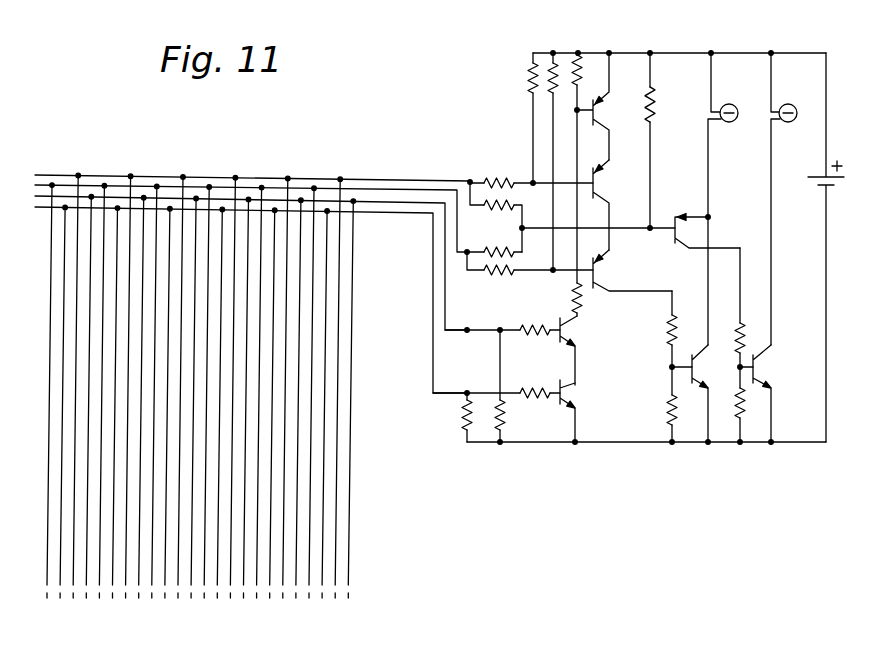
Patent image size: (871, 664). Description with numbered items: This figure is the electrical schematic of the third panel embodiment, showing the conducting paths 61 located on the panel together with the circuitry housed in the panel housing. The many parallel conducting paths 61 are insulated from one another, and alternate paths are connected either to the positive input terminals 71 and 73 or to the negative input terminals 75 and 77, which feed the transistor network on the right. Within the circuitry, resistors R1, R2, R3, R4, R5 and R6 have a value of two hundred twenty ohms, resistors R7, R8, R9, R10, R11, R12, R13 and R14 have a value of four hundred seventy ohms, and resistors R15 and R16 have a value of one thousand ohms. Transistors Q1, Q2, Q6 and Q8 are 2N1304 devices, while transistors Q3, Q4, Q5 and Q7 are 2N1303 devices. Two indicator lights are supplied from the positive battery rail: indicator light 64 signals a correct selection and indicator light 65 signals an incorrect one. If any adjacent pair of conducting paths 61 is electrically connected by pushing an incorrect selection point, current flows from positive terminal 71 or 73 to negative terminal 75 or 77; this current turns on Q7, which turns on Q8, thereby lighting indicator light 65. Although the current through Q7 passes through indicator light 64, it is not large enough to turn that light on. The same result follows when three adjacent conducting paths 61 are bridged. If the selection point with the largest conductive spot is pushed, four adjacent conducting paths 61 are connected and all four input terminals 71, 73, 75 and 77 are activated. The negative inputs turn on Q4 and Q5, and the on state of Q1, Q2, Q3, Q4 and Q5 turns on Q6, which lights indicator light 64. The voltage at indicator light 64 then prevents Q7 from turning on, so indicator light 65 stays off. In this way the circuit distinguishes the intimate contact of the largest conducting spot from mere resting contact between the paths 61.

The conducting paths 61 is at (309, 565).
The indicator light 64 is at (744, 98).
The light 65 is at (805, 98).
The positive input terminal 71 is at (470, 180).
The positive input terminal 73 is at (466, 251).
The negative input terminal 75 is at (466, 330).
The negative input terminal 77 is at (466, 392).
The resistor R1 is at (449, 417).
The resistor R2 is at (512, 386).
The resistor R3 is at (664, 330).
The resistor R4 is at (732, 308).
The resistor R5 is at (531, 76).
The resistor R6 is at (552, 68).
The resistor R7 is at (654, 404).
The resistor R8 is at (728, 404).
The resistor R9 is at (530, 278).
The resistor R10 is at (494, 243).
The resistor R11 is at (497, 217).
The resistor R12 is at (531, 171).
The resistor R13 is at (578, 64).
The resistor R14 is at (667, 141).
The resistor R15 is at (496, 383).
The resistor R16 is at (502, 320).
The transistor Q1 is at (577, 411).
The transistor Q2 is at (579, 350).
The transistor Q3 is at (602, 106).
The transistor Q4 is at (609, 205).
The transistor Q5 is at (632, 270).
The transistor Q6 is at (707, 393).
The transistor Q7 is at (686, 232).
The transistor Q8 is at (772, 393).